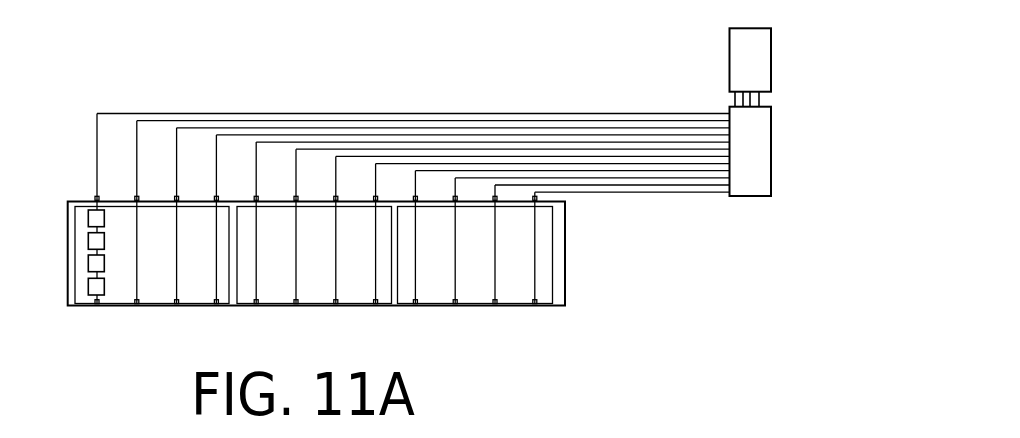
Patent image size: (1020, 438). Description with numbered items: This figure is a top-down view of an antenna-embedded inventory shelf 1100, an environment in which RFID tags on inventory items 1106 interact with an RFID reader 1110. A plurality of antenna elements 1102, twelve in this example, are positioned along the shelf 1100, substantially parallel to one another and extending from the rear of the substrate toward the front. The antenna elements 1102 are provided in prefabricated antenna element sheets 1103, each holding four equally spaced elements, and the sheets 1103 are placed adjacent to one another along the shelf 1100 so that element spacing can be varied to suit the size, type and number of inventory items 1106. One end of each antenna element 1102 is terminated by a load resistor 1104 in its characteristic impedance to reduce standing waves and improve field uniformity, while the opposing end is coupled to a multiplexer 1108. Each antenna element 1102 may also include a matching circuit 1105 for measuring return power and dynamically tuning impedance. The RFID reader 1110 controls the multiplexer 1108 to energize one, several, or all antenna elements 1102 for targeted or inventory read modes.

The antenna-embedded inventory shelf 1100 is at (565, 296).
The antenna element 1102 is at (416, 285).
The antenna element sheet 1103 is at (155, 292).
The load resistor 1104 is at (497, 303).
The matching circuit 1105 is at (136, 198).
The inventory item 1106 is at (87, 218).
The multiplexer 1108 is at (750, 198).
The RFID reader 1110 is at (728, 62).